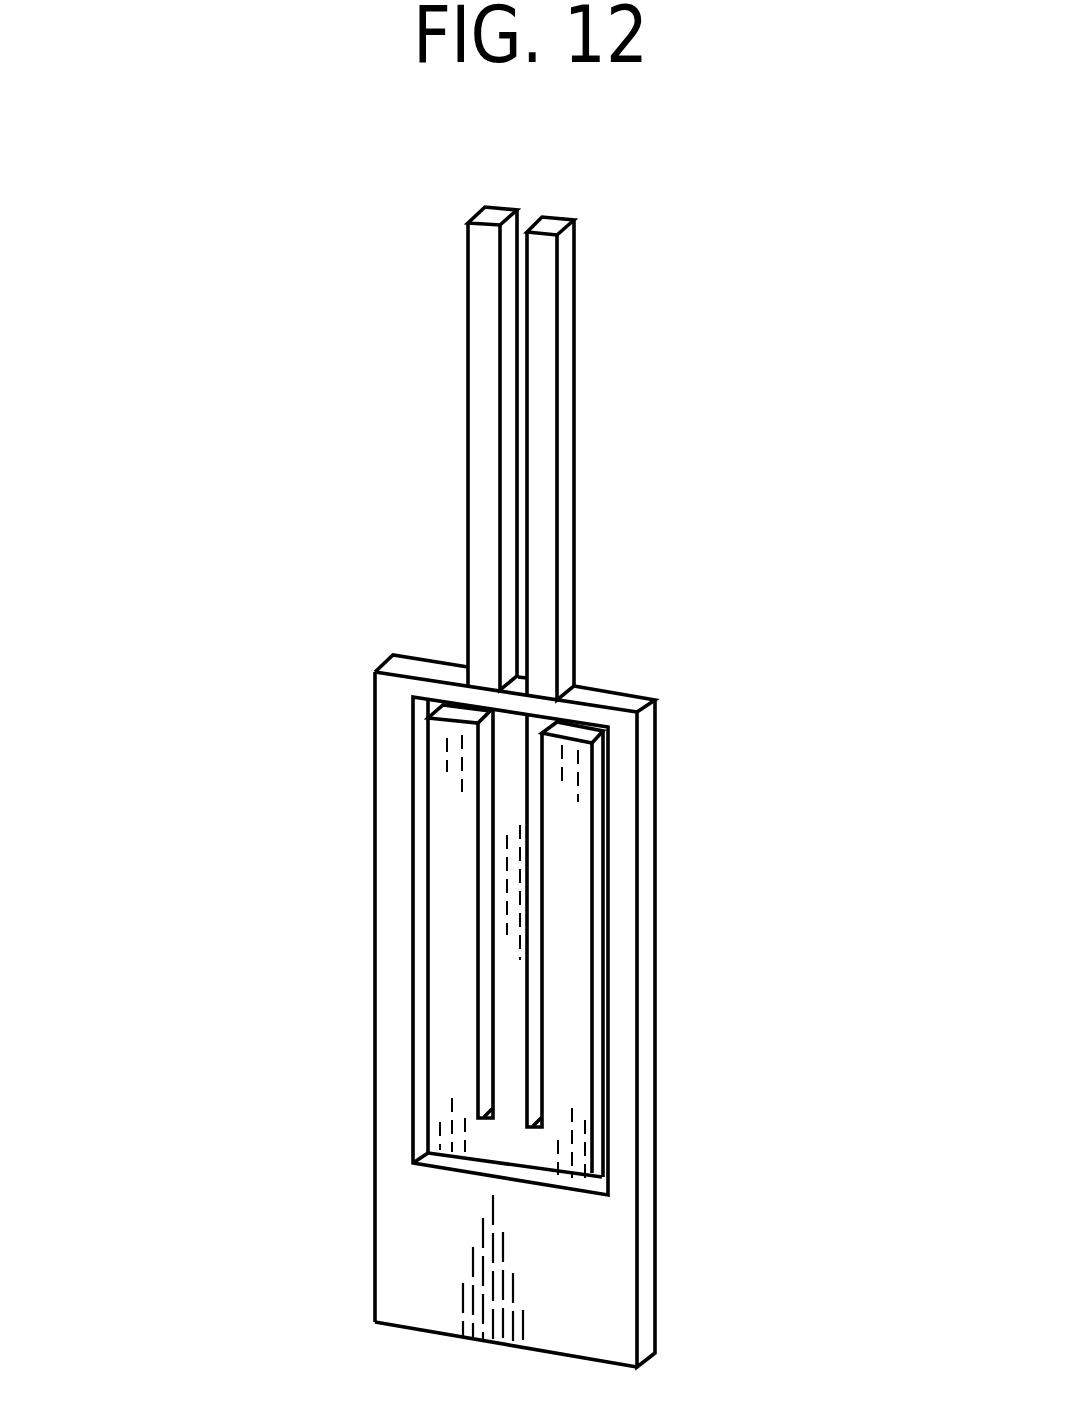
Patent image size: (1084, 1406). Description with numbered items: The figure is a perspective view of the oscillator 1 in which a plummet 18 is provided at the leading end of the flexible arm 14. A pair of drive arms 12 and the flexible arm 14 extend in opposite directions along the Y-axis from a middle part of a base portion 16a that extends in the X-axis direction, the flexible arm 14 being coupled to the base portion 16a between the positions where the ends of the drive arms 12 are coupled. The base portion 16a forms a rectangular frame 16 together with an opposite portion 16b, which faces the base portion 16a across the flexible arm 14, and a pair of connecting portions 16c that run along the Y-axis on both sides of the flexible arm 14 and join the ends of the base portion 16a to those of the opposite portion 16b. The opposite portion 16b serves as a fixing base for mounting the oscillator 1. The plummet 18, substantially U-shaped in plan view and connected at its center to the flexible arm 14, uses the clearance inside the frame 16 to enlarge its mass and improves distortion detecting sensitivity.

The oscillator 1 is at (592, 275).
The drive arms 12 is at (483, 368).
The flexible arm 14 is at (515, 860).
The rectangular frame 16 is at (362, 865).
The base portion 16a is at (588, 713).
The opposite portion 16b is at (587, 1283).
The connecting portions 16c is at (403, 781).
The plummet 18 is at (553, 1150).